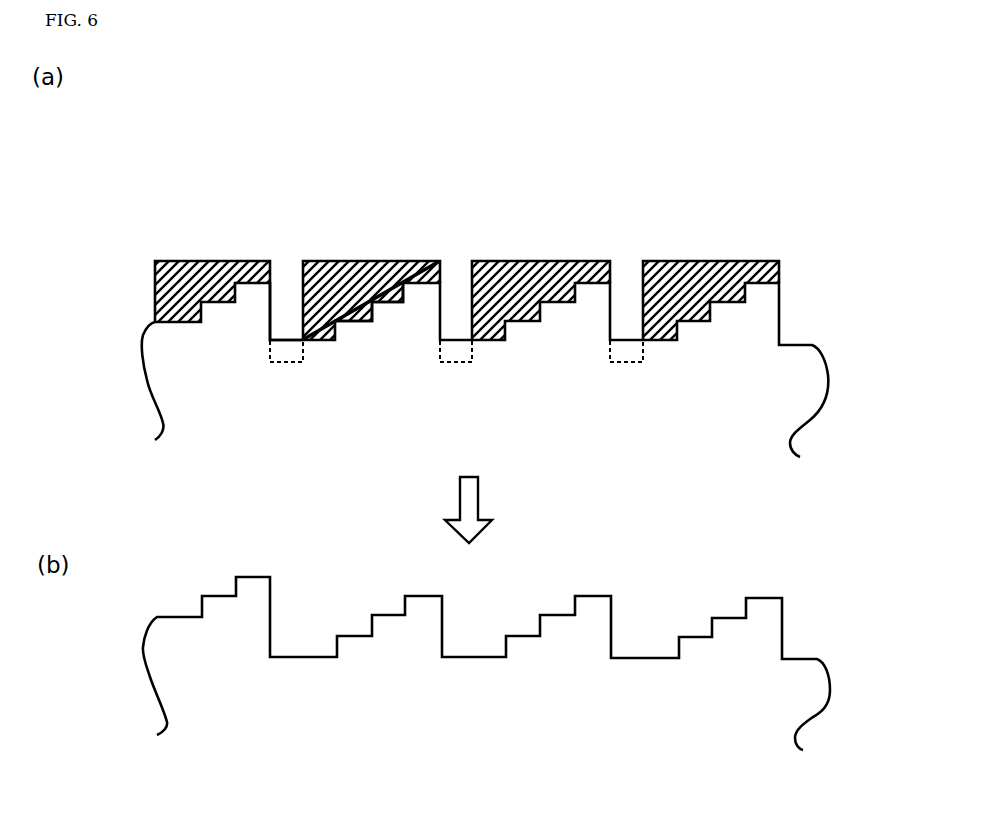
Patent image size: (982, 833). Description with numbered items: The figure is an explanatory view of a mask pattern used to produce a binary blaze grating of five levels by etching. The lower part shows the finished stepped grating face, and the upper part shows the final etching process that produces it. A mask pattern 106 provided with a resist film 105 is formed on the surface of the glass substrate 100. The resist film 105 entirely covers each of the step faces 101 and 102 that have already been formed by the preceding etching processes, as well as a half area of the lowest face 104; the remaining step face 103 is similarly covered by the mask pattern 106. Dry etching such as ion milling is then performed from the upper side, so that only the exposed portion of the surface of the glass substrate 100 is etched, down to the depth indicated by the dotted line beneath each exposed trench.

The glass substrate 100 is at (808, 378).
The step face 101 is at (413, 263).
The step face 102 is at (387, 303).
The step riser portion 103 is at (348, 318).
The lowest face 104 is at (302, 340).
The resist film 105 is at (323, 262).
The mask pattern 106 is at (591, 169).